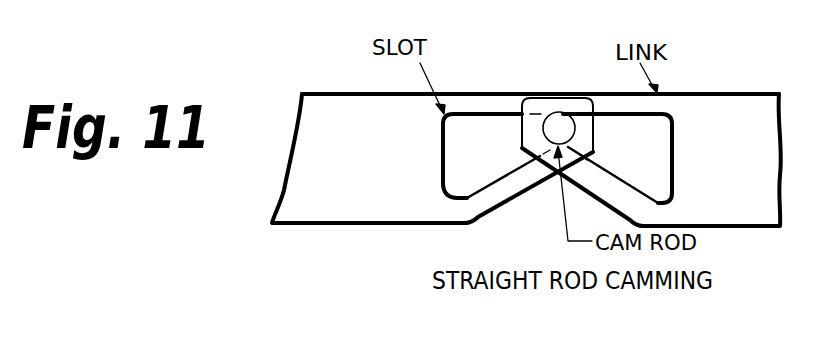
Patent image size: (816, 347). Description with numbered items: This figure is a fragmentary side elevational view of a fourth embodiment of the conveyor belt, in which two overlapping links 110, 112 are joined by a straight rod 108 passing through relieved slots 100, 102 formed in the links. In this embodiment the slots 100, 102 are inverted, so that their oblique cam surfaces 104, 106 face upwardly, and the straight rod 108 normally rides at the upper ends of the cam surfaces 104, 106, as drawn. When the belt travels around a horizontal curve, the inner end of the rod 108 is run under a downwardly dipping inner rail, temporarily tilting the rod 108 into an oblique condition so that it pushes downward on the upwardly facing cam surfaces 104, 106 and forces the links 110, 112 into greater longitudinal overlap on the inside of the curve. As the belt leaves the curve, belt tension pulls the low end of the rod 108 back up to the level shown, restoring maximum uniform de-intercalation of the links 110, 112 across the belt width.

The slot 100 is at (672, 168).
The slot 102 is at (446, 172).
The oblique cam surface 104 is at (618, 183).
The oblique cam surface 106 is at (486, 189).
The straight rod 108 is at (552, 125).
The link 110 is at (728, 98).
The link 112 is at (369, 94).